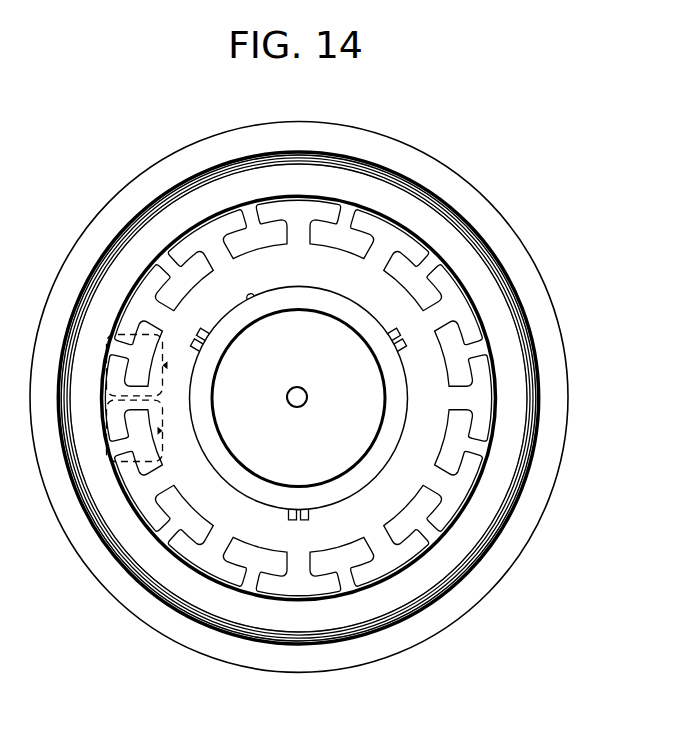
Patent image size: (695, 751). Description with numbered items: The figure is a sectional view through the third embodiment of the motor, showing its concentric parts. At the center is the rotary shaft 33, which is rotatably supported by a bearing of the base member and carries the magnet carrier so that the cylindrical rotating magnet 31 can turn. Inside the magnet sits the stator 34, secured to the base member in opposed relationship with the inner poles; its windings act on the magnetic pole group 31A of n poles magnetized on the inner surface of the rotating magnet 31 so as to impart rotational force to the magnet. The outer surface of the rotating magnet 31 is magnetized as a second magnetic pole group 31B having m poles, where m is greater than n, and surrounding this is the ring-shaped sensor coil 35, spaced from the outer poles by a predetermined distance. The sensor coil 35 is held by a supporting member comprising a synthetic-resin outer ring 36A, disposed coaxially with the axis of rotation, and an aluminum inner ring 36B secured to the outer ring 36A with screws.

The cylindrical rotating magnet 31 is at (358, 172).
The magnetic pole group 31A is at (297, 163).
The magnetic pole group 31B is at (328, 158).
The rotary shaft 33 is at (297, 388).
The stator 34 is at (305, 282).
The ring-shaped sensor coil 35 is at (470, 223).
The outer ring 36A is at (543, 320).
The inner ring 36B is at (483, 255).